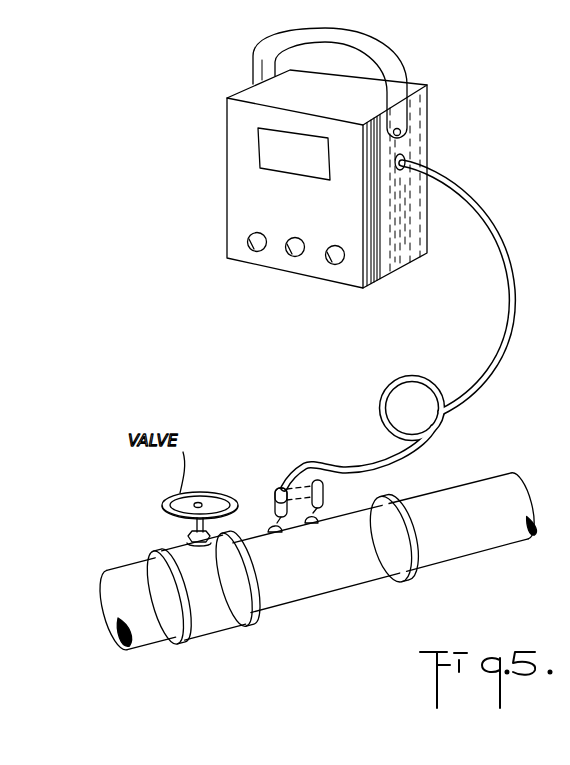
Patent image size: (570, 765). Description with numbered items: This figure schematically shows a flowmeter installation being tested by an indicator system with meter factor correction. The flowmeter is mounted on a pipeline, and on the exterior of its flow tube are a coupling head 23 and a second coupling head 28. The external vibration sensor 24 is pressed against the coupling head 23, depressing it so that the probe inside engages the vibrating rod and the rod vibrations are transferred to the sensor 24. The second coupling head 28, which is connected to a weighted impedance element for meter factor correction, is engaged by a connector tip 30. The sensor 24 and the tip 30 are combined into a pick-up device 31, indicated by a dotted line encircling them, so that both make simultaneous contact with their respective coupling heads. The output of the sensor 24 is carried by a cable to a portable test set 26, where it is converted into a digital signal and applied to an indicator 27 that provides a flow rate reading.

The coupling head 23 is at (318, 516).
The external vibration sensor 24 is at (482, 383).
The portable test set 26 is at (420, 133).
The indicator 27 is at (260, 165).
The second coupling head 28 is at (280, 528).
The connector tip 30 is at (273, 503).
The pick-up device 31 is at (274, 492).